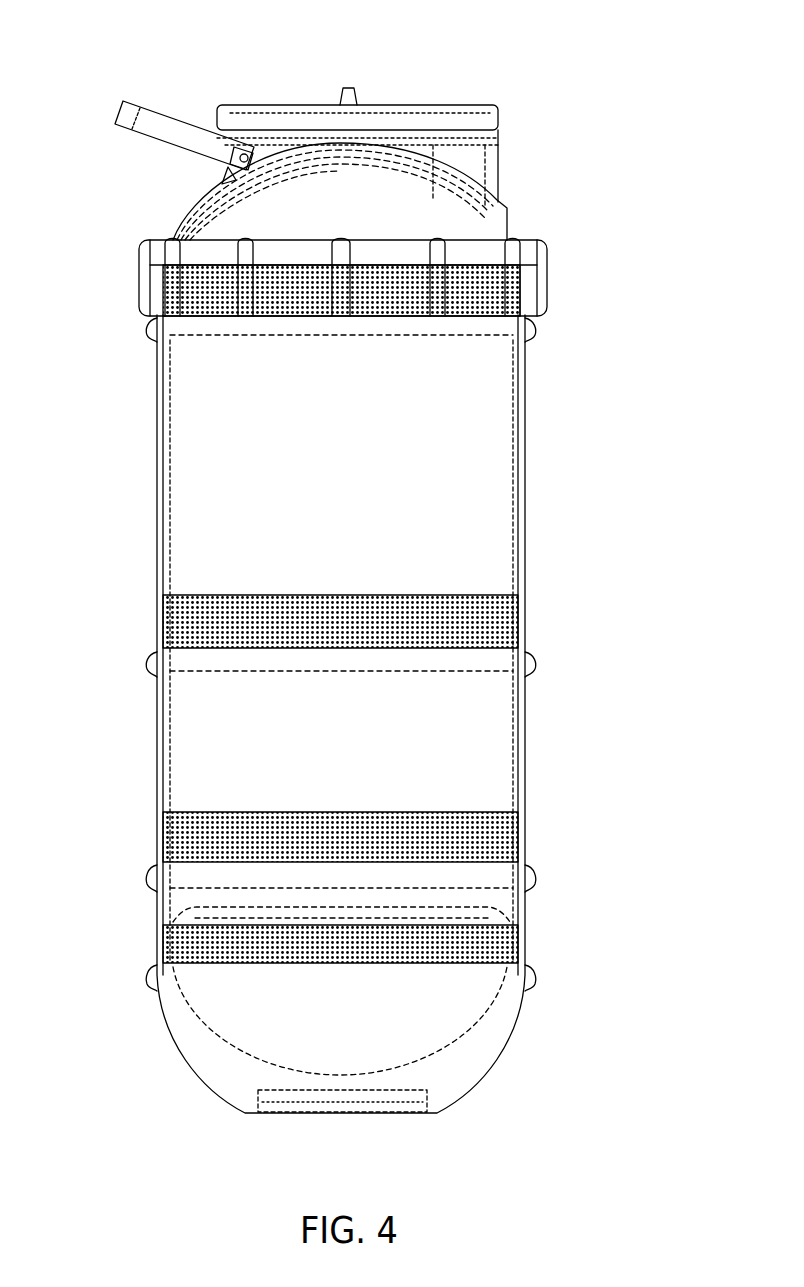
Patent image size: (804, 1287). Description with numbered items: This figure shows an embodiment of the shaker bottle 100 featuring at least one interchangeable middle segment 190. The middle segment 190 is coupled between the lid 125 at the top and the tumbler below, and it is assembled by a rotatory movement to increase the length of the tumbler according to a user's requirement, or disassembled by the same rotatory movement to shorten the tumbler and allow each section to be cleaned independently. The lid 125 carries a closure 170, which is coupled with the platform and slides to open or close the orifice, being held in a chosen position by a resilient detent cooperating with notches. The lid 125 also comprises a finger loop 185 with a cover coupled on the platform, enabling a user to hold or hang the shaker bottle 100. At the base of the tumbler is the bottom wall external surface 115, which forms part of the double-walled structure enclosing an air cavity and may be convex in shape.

The shaker bottle 100 is at (359, 594).
The bottom wall external surface 115 is at (363, 1103).
The lid 125 is at (423, 208).
The closure 170 is at (333, 125).
The finger loop 185 is at (187, 133).
The interchangeable middle segment 190 is at (523, 628).